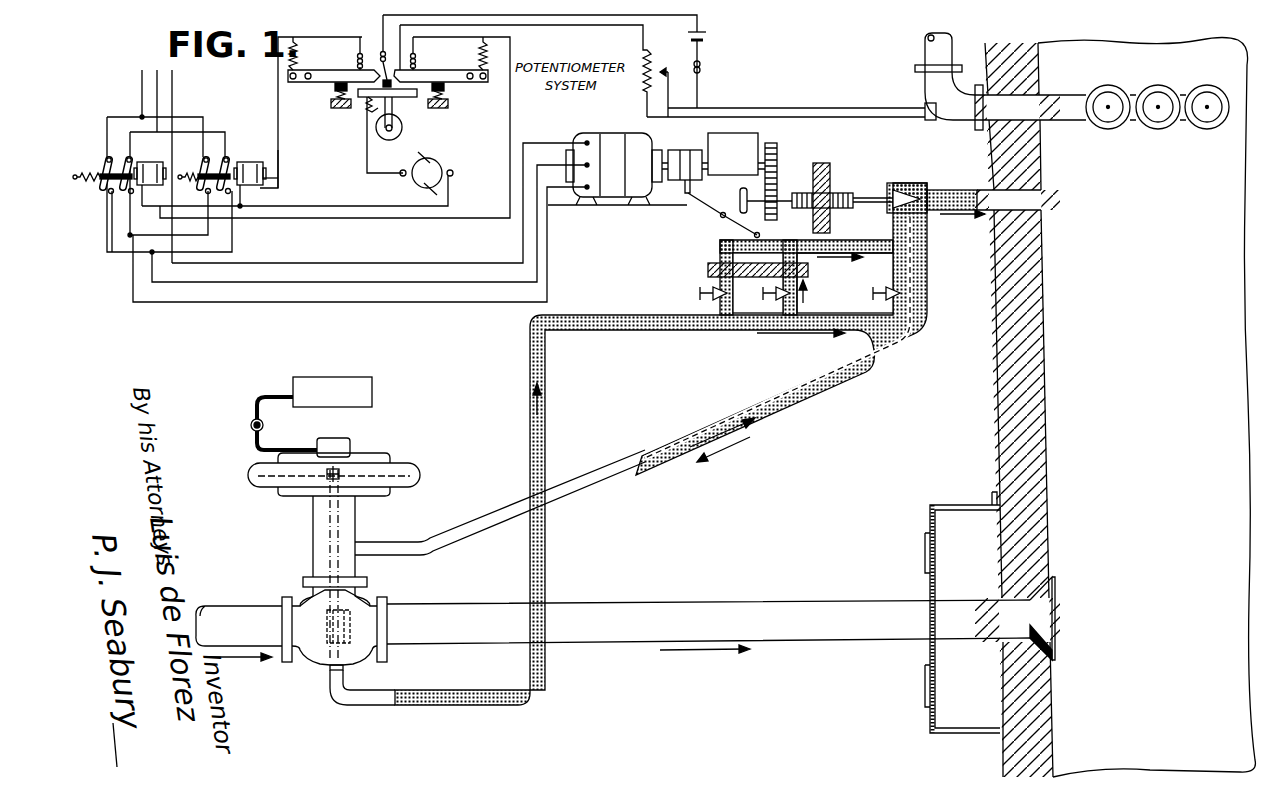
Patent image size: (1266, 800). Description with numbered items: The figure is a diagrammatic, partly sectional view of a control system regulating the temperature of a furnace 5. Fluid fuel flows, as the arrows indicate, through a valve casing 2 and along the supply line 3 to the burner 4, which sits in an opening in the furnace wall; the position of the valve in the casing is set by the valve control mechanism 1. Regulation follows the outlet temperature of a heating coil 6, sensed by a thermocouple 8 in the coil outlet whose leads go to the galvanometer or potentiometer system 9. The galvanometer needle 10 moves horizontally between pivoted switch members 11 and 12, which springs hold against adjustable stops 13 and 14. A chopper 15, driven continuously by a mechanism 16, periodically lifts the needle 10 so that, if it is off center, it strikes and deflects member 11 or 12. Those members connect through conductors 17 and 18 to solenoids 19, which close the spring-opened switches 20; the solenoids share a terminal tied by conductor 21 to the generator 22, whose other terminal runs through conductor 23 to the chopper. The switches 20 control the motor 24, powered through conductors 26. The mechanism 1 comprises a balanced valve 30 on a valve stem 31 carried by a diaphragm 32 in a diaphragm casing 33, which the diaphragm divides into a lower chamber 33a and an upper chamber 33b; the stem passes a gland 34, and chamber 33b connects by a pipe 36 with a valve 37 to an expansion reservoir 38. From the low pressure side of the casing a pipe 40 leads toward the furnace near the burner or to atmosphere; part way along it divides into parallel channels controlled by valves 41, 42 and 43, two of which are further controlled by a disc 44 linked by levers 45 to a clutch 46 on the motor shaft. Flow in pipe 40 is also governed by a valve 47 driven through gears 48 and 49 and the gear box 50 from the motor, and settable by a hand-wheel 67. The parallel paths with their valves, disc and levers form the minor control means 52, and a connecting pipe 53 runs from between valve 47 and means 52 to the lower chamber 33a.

The valve control mechanism 1 is at (357, 522).
The valve casing 2 is at (372, 601).
The supply line 3 is at (698, 604).
The burner 4 is at (1048, 633).
The furnace 5 is at (1078, 428).
The heating coil 6 is at (1160, 128).
The thermocouple 8 is at (935, 120).
The galvanometer or potentiometer system 9 is at (692, 35).
The galvanometer needle 10 is at (393, 92).
The switch member 11 is at (445, 70).
The switch member 12 is at (332, 72).
The adjustable stop 13 is at (448, 104).
The adjustable stop 14 is at (336, 104).
The chopper 15 is at (366, 104).
The chopper operating mechanism 16 is at (396, 125).
The conductor 17 is at (512, 132).
The conductor 18 is at (285, 160).
The solenoid 19 is at (151, 167).
The switch 20 is at (112, 170).
The conductor 21 is at (327, 204).
The generator 22 is at (432, 168).
The conductor 23 is at (374, 174).
The motor 24 is at (600, 143).
The conductors 26 is at (172, 90).
The balanced valve 30 is at (312, 604).
The valve stem 31 is at (330, 537).
The diaphragm 32 is at (388, 470).
The diaphragm casing 33 is at (420, 470).
The lower diaphragm chamber 33a is at (290, 492).
The upper diaphragm chamber 33b is at (360, 463).
The gland or stuffing box 34 is at (318, 580).
The pipe 36 is at (262, 446).
The valve 37 is at (251, 423).
The expansion reservoir 38 is at (372, 390).
The pipe 40 is at (962, 190).
The valve 41 is at (700, 293).
The valve 42 is at (777, 302).
The valve 43 is at (880, 302).
The disc 44 is at (712, 270).
The levers 45 is at (708, 211).
The clutch 46 is at (685, 152).
The valve 47 is at (885, 190).
The gear 48 is at (822, 192).
The gear 49 is at (778, 150).
The gear box 50 is at (742, 136).
The minor control means 52 is at (870, 266).
The connecting pipe 53 is at (784, 404).
The hand-wheel 67 is at (740, 195).